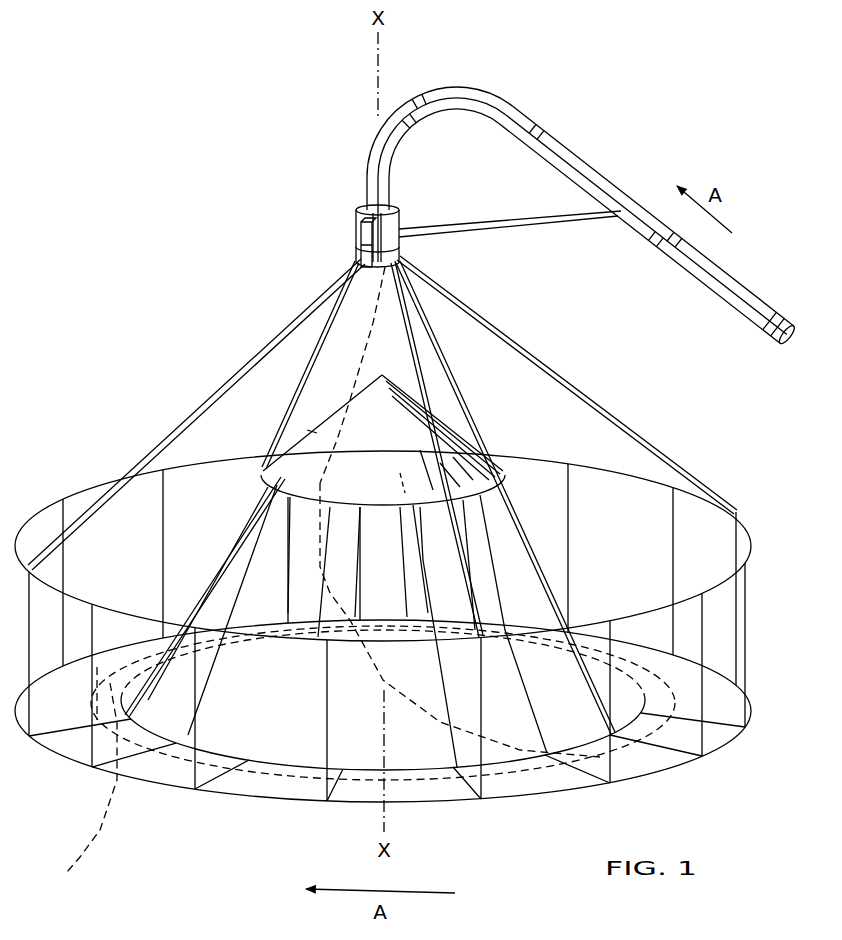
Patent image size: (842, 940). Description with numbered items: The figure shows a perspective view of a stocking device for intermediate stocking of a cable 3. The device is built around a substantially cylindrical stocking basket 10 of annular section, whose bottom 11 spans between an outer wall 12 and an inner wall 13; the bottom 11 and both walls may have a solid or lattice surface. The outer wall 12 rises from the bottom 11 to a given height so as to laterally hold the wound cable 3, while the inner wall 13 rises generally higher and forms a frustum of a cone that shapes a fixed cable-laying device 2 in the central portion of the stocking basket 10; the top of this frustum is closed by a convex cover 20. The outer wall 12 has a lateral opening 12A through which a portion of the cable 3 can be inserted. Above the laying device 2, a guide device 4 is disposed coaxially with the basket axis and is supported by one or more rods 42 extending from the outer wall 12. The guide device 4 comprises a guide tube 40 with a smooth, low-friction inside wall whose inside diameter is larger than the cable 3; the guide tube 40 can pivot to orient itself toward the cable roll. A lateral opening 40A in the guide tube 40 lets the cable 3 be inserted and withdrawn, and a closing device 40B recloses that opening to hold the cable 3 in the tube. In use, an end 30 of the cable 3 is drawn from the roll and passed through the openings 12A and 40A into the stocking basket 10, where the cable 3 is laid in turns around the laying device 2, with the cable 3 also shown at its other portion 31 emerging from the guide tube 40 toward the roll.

The fixed cable-laying device 2 is at (448, 408).
The cable 3 is at (377, 323).
The guide device 4 is at (357, 152).
The stocking basket 10 is at (87, 480).
The bottom 11 is at (383, 736).
The outer wall 12 is at (746, 632).
The lateral opening 12A is at (131, 622).
The inner wall 13 is at (530, 511).
The convex cover 20 is at (476, 447).
The end of the cable 30 is at (83, 862).
The tube end 31 is at (798, 343).
The guide tube 40 is at (580, 182).
The lateral opening 40A is at (593, 168).
The closing device 40B is at (413, 97).
The rod 42 is at (657, 450).